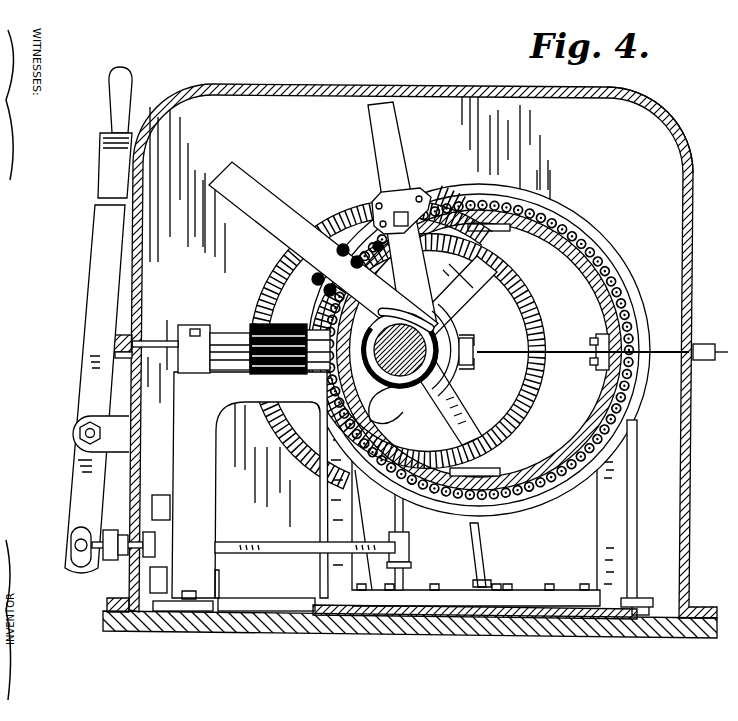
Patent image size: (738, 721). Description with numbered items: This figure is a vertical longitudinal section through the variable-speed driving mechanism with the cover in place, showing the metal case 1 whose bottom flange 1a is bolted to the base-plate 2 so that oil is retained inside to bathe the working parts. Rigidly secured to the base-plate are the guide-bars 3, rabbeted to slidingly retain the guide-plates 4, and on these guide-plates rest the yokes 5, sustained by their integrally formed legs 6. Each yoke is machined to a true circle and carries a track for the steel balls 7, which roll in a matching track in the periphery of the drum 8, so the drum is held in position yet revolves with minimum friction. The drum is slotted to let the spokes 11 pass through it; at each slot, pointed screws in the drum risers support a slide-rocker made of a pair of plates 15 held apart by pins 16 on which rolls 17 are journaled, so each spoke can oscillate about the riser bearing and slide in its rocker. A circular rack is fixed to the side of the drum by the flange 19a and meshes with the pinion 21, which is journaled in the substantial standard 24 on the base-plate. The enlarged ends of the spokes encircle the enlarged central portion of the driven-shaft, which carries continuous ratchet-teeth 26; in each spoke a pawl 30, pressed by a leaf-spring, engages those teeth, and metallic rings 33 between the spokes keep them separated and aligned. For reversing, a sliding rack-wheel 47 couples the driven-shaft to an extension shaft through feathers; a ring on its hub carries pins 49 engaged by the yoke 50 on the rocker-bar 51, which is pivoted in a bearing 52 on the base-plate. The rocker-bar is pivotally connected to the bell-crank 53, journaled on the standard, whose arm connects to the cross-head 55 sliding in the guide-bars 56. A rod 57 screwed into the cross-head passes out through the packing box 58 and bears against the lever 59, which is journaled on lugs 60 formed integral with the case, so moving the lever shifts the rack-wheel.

The case 1 is at (690, 522).
The flange 1a is at (697, 197).
The base-plate 2 is at (103, 621).
The guide-bars 3 is at (245, 607).
The guide-plates 4 is at (356, 613).
The yokes 5 is at (590, 246).
The legs 6 is at (620, 522).
The steel balls 7 is at (622, 296).
The drum 8 is at (545, 213).
The spokes 11 is at (392, 150).
The plates 15 is at (316, 288).
The pins 16 is at (374, 206).
The rolls 17 is at (290, 270).
The flange 19a is at (590, 378).
The pinion 21 is at (255, 330).
The standard 24 is at (470, 676).
The ratchet-teeth 26 is at (455, 408).
The pawl 30 is at (383, 307).
The metallic rings 33 is at (455, 342).
The rack-wheel 47 is at (325, 238).
The pins 49 is at (478, 352).
The yoke 50 is at (472, 363).
The rocker-bar 51 is at (395, 505).
The bearing 52 is at (420, 590).
The bell-crank 53 is at (265, 549).
The cross-head 55 is at (148, 532).
The guide-bars 56 is at (164, 495).
The rod 57 is at (92, 562).
The packing box 58 is at (112, 562).
The lever 59 is at (107, 160).
The lugs 60 is at (85, 452).